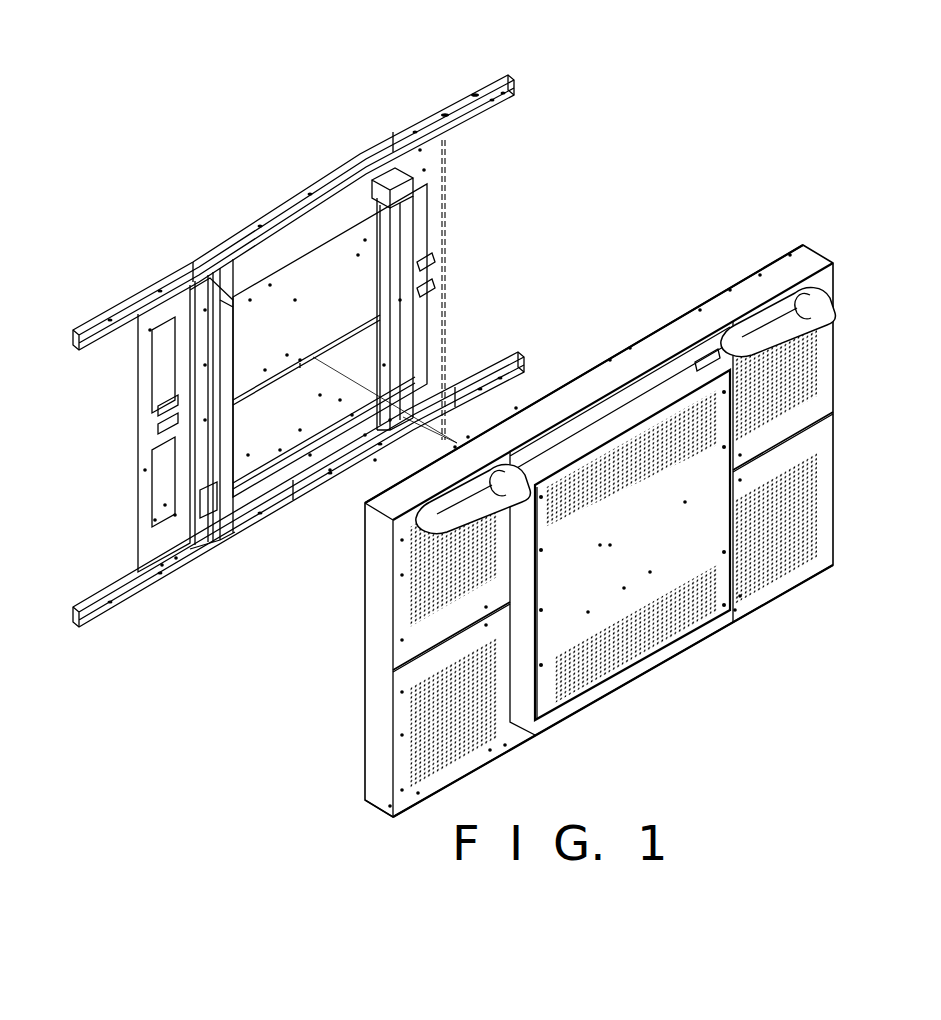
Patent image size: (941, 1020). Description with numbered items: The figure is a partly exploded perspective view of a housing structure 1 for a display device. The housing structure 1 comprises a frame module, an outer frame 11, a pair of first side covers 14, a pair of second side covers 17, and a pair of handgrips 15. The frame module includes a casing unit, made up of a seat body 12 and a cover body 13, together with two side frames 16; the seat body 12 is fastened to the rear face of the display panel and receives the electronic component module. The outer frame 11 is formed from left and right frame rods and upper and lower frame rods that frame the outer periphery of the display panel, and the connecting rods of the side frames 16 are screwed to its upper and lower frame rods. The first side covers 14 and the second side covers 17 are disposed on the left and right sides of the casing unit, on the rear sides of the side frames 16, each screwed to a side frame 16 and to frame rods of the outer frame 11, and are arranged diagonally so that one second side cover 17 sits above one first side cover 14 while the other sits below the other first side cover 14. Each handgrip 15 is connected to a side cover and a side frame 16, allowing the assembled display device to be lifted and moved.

The housing structure 1 is at (612, 478).
The outer frame 11 is at (706, 318).
The seat body 12 is at (313, 250).
The cover body 13 is at (688, 574).
The first side cover 14 is at (400, 710).
The handgrip 15 is at (408, 552).
The side frame 16 is at (140, 276).
The second side cover 17 is at (407, 612).